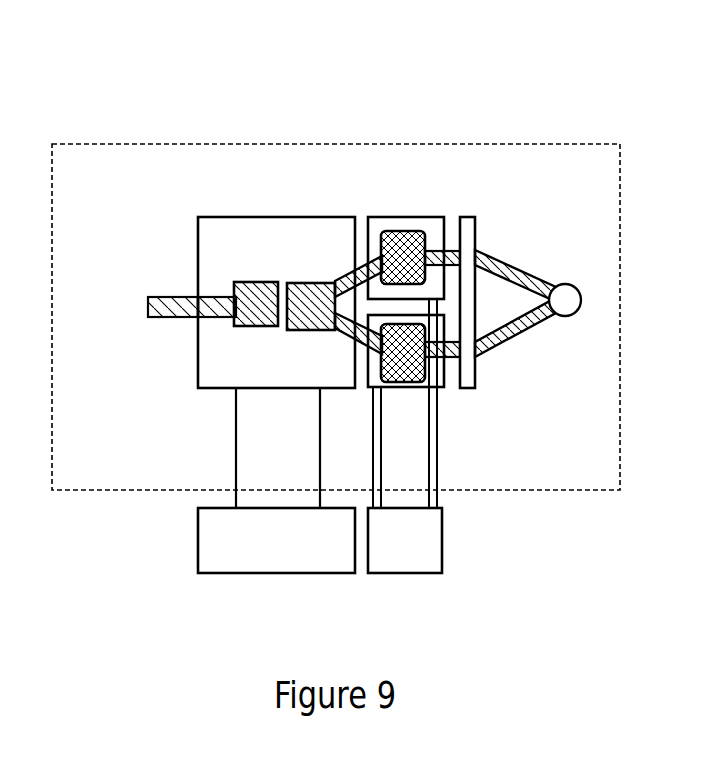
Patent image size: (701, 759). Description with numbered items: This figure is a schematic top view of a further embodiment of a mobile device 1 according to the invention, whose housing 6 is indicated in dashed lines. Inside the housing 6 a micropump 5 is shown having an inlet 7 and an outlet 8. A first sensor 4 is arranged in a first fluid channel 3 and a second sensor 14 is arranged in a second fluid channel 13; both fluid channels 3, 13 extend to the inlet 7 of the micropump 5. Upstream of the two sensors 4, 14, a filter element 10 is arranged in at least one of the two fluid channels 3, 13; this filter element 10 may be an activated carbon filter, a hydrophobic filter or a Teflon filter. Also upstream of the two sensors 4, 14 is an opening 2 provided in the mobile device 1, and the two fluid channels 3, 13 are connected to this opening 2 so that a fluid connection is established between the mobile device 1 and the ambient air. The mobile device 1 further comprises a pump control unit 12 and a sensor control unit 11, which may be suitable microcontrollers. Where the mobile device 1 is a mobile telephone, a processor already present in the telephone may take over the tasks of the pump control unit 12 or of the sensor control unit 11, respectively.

The mobile device 1 is at (581, 104).
The opening 2 is at (582, 300).
The first fluid channel 3 is at (486, 248).
The first sensor 4 is at (405, 217).
The micropump 5 is at (277, 217).
The housing 6 is at (620, 358).
The inlet 7 is at (311, 283).
The outlet 8 is at (254, 282).
The filter element 10 is at (466, 217).
The sensor control unit 11 is at (402, 575).
The pump control unit 12 is at (277, 575).
The second fluid channel 13 is at (484, 360).
The second sensor 14 is at (405, 388).